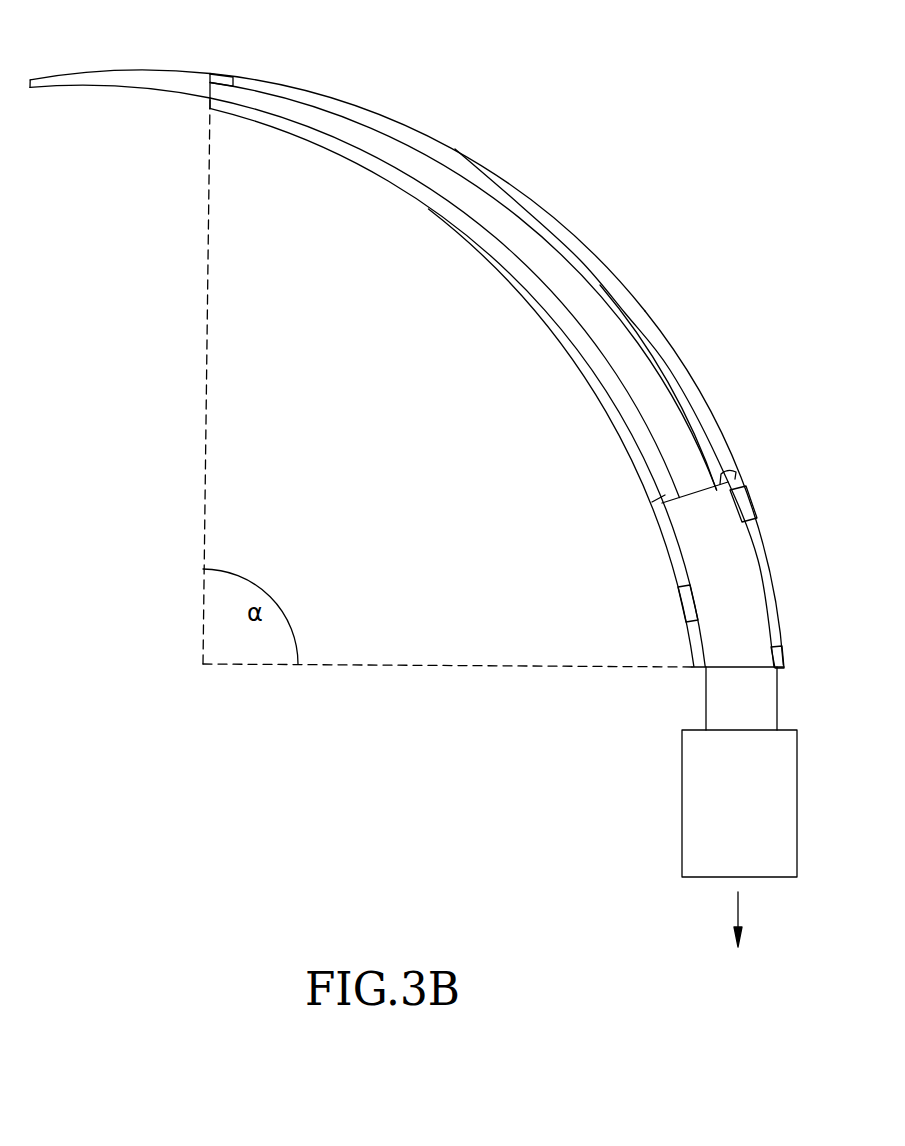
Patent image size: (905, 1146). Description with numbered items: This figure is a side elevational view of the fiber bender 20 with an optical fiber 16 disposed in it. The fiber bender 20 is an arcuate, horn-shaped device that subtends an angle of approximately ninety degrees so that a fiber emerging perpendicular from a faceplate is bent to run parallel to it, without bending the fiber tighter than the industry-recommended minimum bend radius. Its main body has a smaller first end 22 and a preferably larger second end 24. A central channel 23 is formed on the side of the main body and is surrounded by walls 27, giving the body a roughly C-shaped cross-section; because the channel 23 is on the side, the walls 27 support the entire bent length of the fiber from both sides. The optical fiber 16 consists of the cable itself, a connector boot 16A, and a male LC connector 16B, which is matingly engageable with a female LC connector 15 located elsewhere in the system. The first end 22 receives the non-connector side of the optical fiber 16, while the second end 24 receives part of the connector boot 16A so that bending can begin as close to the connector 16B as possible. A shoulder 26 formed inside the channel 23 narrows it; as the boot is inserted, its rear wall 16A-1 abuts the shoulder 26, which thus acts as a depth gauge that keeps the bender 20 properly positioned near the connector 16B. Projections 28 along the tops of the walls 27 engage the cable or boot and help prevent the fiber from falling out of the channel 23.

The female LC connector 15 is at (736, 960).
The optical fiber 16 is at (97, 78).
The connector boot 16A is at (707, 693).
The rear wall of connector boot 16A-1 is at (735, 472).
The male LC connector 16B is at (682, 815).
The fiber bender 20 is at (373, 112).
The first end 22 is at (267, 80).
The central channel 23 is at (555, 237).
The second end 24 is at (777, 592).
The shoulder 26 is at (720, 440).
The walls 27 is at (657, 325).
The projections 28 is at (222, 77).